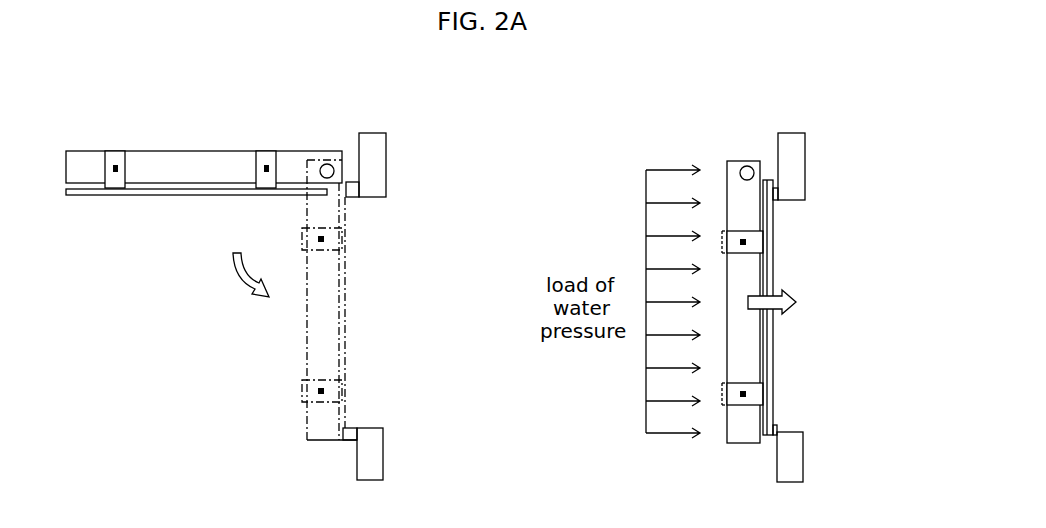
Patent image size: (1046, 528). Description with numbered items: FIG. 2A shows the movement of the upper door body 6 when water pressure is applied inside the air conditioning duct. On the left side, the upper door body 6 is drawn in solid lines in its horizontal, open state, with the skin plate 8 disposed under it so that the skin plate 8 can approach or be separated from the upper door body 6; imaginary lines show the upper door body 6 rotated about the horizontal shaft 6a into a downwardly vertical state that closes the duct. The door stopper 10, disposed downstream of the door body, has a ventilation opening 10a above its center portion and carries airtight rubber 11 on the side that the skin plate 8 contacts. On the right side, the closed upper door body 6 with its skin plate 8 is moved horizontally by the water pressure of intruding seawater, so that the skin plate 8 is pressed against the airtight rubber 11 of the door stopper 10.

The upper door body 6 is at (144, 162).
The horizontal shaft 6a is at (327, 163).
The skin plate 8 is at (92, 197).
The door stopper 10 is at (375, 160).
The ventilation opening 10a is at (373, 300).
The airtight rubber 11 is at (357, 200).